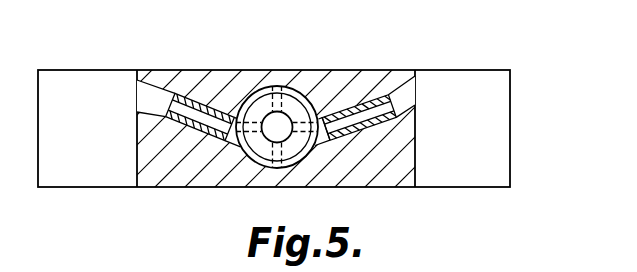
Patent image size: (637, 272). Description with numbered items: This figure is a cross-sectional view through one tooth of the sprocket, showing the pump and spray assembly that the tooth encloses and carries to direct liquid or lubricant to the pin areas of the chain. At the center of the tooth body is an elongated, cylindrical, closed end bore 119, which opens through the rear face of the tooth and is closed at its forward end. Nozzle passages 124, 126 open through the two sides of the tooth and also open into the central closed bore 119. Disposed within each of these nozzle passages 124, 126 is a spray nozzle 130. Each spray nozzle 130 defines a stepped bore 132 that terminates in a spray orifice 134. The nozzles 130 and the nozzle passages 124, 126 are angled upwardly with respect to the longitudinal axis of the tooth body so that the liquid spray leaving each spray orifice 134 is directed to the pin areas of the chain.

The closed end bore 119 is at (300, 88).
The nozzle passage 124 is at (393, 92).
The nozzle passage 126 is at (167, 110).
The spray nozzle 130 is at (174, 96).
The stepped bore 132 is at (343, 128).
The spray orifice 134 is at (400, 108).